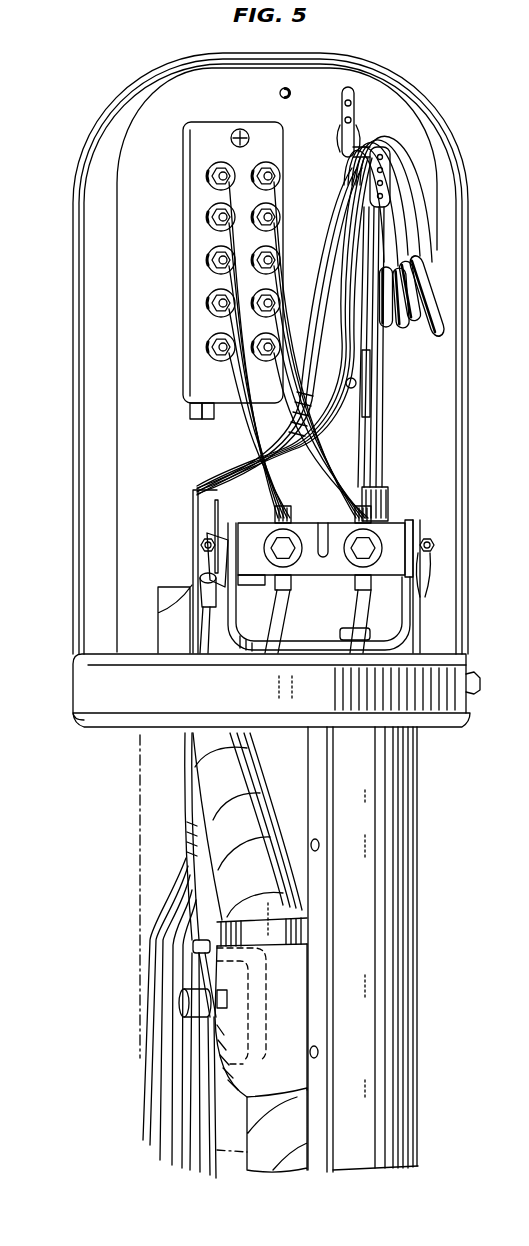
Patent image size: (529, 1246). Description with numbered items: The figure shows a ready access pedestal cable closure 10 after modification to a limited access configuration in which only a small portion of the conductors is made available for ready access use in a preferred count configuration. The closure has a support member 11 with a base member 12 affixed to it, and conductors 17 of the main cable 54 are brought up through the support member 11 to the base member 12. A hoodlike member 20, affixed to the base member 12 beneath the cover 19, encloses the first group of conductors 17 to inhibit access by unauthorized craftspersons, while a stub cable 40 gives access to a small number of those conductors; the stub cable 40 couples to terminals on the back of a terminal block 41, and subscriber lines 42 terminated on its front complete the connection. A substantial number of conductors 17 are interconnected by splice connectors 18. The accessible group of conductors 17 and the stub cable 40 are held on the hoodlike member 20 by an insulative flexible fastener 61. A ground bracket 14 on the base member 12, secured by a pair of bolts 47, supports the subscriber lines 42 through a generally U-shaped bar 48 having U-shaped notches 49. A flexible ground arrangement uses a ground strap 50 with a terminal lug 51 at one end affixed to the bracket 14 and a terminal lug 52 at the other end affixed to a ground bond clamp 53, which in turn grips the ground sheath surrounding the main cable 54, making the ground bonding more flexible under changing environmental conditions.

The pedestal cable closure 10 is at (415, 853).
The support member 11 is at (393, 782).
The base member 12 is at (468, 700).
The ground bracket 14 is at (424, 588).
The conductors 17 is at (412, 224).
The splice connectors 18 is at (428, 303).
The cover 19 is at (96, 130).
The hoodlike member 20 is at (117, 213).
The stub cable 40 is at (256, 430).
The terminal block 41 is at (207, 148).
The subscriber lines 42 is at (325, 460).
The bolts 47 is at (385, 642).
The U-shaped bar 48 is at (397, 530).
The U-shaped notches 49 is at (325, 524).
The ground strap 50 is at (180, 830).
The terminal lug 51 is at (213, 560).
The terminal lug 52 is at (204, 978).
The ground bond clamp 53 is at (237, 1040).
The main cable 54 is at (213, 785).
The insulative flexible fastener 61 is at (382, 155).